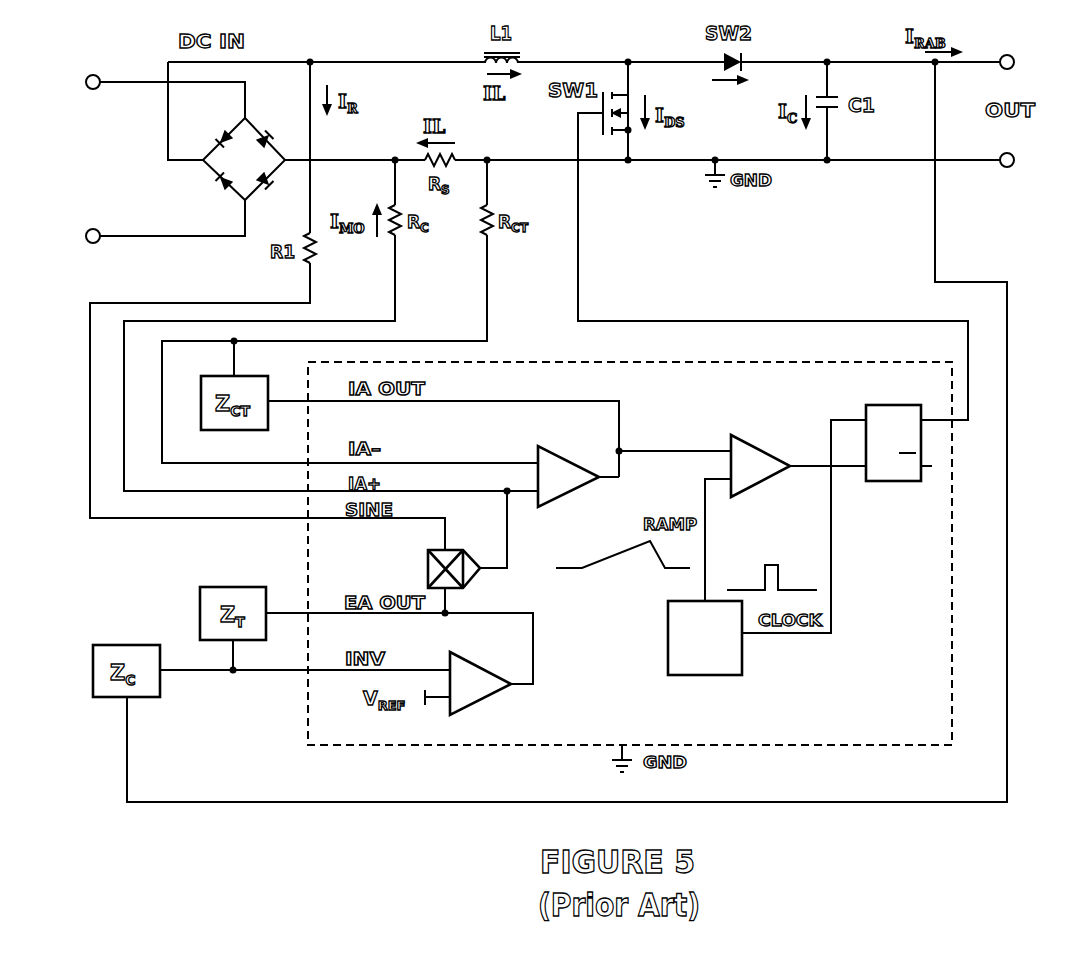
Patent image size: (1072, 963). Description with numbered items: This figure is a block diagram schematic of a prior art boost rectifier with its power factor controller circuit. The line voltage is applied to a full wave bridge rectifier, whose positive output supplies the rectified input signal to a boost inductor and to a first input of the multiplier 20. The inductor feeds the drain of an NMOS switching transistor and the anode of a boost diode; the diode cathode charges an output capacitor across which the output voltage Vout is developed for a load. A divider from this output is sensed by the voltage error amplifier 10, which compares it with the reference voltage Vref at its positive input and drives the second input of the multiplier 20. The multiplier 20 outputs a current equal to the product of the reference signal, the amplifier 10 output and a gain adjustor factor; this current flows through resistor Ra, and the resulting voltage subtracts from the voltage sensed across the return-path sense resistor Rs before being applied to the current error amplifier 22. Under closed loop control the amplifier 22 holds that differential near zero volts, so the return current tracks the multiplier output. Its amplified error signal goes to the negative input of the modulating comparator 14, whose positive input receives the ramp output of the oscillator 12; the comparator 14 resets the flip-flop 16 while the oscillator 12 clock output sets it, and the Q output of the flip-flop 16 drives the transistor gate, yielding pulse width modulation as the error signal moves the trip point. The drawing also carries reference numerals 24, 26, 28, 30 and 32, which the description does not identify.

The error amplifier 10 is at (486, 667).
The oscillator 12 is at (667, 637).
The modulating comparator 14 is at (763, 489).
The flip-flop 16 is at (896, 486).
The multiplier 20 is at (147, 94).
The current error amplifier 22 is at (147, 224).
The output terminal 24 is at (1025, 63).
The output terminal 26 is at (1025, 161).
The diode bridge rectifier 28 is at (214, 144).
The multiplier 30 is at (417, 565).
The current amplifier 32 is at (546, 448).